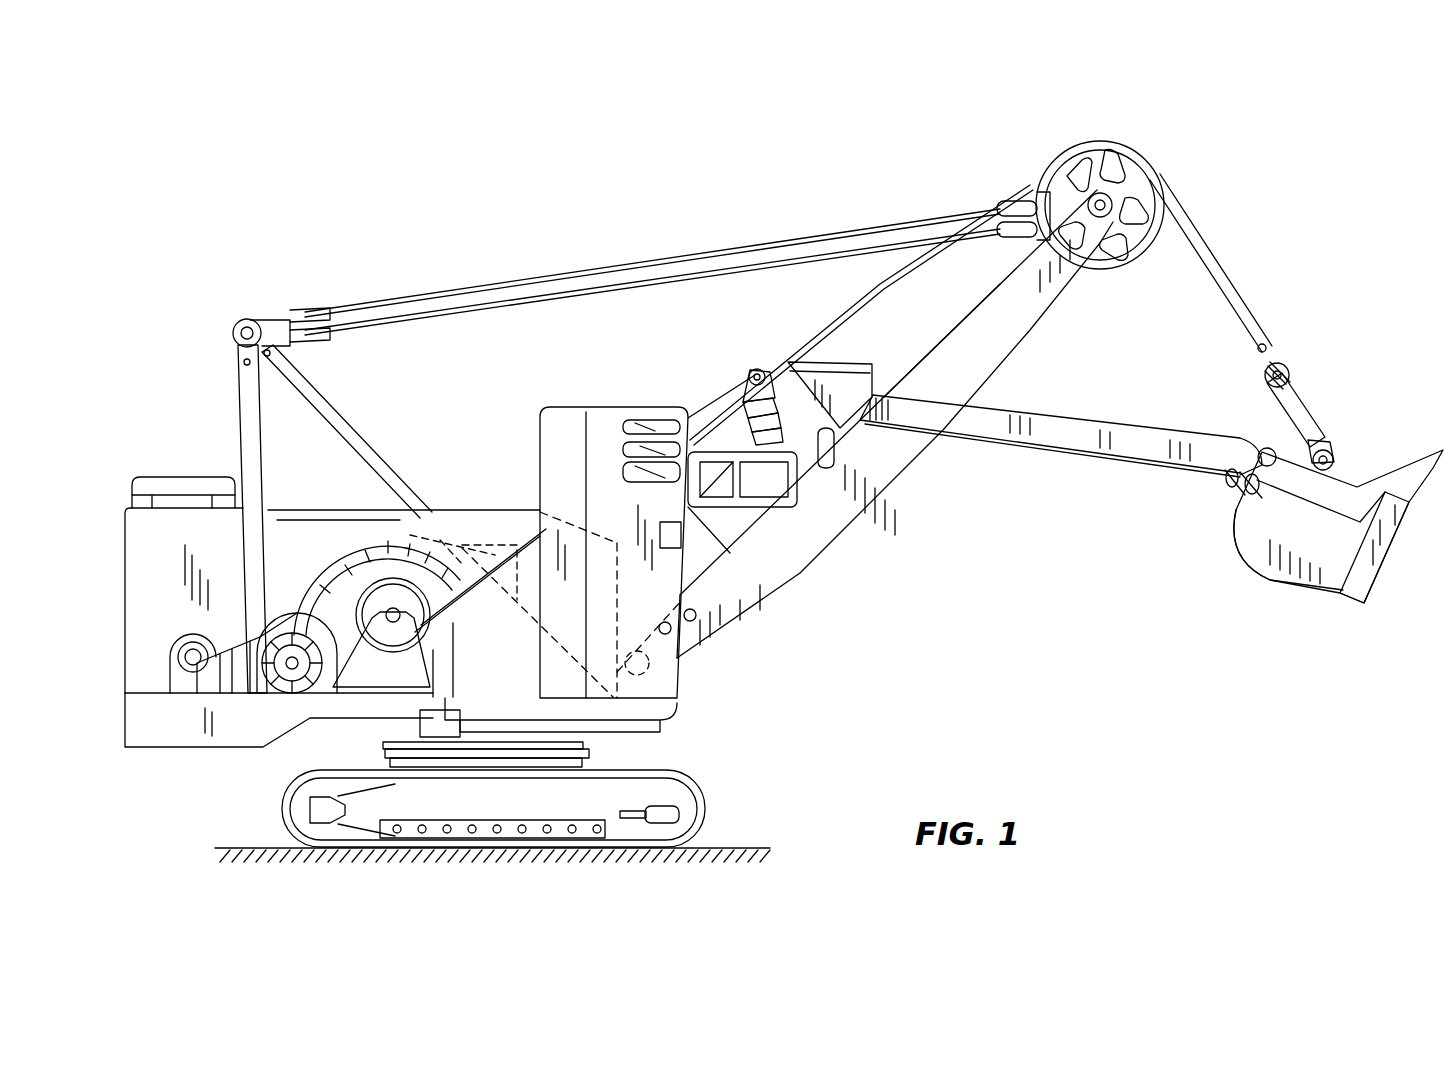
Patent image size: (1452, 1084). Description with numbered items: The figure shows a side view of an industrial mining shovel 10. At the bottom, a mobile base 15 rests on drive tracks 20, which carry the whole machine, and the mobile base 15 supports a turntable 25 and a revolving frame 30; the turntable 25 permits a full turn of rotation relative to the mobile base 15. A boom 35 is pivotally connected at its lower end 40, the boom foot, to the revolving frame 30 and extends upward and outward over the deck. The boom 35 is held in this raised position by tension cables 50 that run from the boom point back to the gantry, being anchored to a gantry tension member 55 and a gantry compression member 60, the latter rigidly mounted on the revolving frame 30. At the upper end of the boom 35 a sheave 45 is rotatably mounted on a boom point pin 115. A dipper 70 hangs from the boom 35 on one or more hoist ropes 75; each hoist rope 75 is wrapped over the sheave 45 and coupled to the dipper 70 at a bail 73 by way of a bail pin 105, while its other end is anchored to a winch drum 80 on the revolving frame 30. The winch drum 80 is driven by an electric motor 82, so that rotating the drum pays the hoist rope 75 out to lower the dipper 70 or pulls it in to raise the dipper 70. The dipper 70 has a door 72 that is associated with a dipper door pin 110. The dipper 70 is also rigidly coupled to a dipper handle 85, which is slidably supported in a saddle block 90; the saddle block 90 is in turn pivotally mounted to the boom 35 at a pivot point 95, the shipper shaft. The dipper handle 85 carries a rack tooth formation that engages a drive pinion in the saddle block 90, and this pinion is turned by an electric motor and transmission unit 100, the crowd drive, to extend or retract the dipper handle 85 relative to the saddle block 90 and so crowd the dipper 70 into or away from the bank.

The shovel 10 is at (849, 564).
The mobile base 15 is at (418, 808).
The drive tracks 20 is at (703, 818).
The turntable 25 is at (588, 745).
The revolving frame 30 is at (410, 655).
The boom 35 is at (1000, 342).
The lower end 40 is at (677, 692).
The sheave 45 is at (1150, 185).
The tension cables 50 is at (703, 277).
The gantry tension member 55 is at (250, 430).
The gantry compression member 60 is at (390, 483).
The dipper 70 is at (1385, 545).
The door 72 is at (1283, 580).
The bail 73 is at (1303, 413).
The hoist ropes 75 is at (1217, 262).
The winch drum 80 is at (385, 555).
The electric motor 82 is at (420, 620).
The dipper handle 85 is at (1033, 430).
The saddle block 90 is at (848, 378).
The pivot point 95 is at (826, 468).
The transmission unit 100 is at (745, 415).
The bail pin 105 is at (1278, 352).
The dipper door pin 110 is at (1235, 515).
The boom point pin 115 is at (1106, 195).